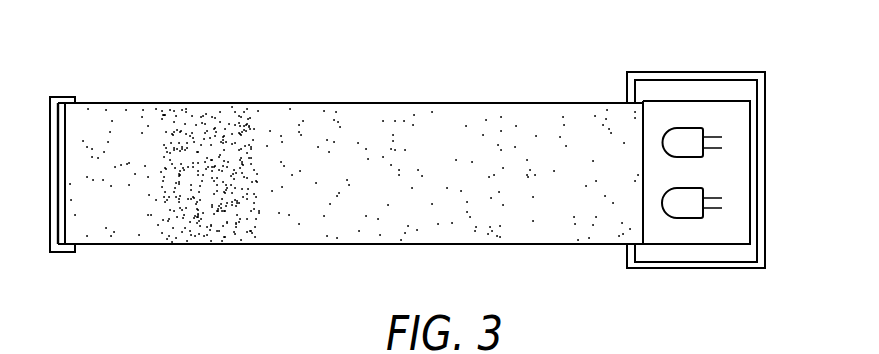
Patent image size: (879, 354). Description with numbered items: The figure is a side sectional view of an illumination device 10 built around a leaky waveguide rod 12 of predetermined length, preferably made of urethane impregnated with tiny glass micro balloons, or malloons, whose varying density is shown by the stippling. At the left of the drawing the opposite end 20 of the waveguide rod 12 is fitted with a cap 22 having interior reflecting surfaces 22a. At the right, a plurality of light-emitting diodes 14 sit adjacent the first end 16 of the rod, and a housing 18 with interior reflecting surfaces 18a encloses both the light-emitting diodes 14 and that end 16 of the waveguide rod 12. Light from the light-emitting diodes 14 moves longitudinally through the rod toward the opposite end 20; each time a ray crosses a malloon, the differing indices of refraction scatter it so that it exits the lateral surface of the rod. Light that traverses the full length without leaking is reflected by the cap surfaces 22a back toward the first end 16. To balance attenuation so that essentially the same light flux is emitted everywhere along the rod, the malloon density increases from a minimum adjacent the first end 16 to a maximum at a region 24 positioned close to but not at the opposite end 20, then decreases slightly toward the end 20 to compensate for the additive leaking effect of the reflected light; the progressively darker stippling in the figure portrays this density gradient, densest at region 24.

The illumination device 10 is at (135, 80).
The leaky waveguide rod 12 is at (507, 244).
The light-emitting diodes 14 is at (707, 194).
The first end 16 is at (643, 117).
The housing 18 is at (733, 72).
The interior reflecting surfaces 18a is at (683, 262).
The opposite end 20 is at (67, 178).
The cap 22 is at (58, 97).
The interior reflecting surfaces 22a is at (58, 222).
The region of maximum malloon density 24 is at (217, 230).